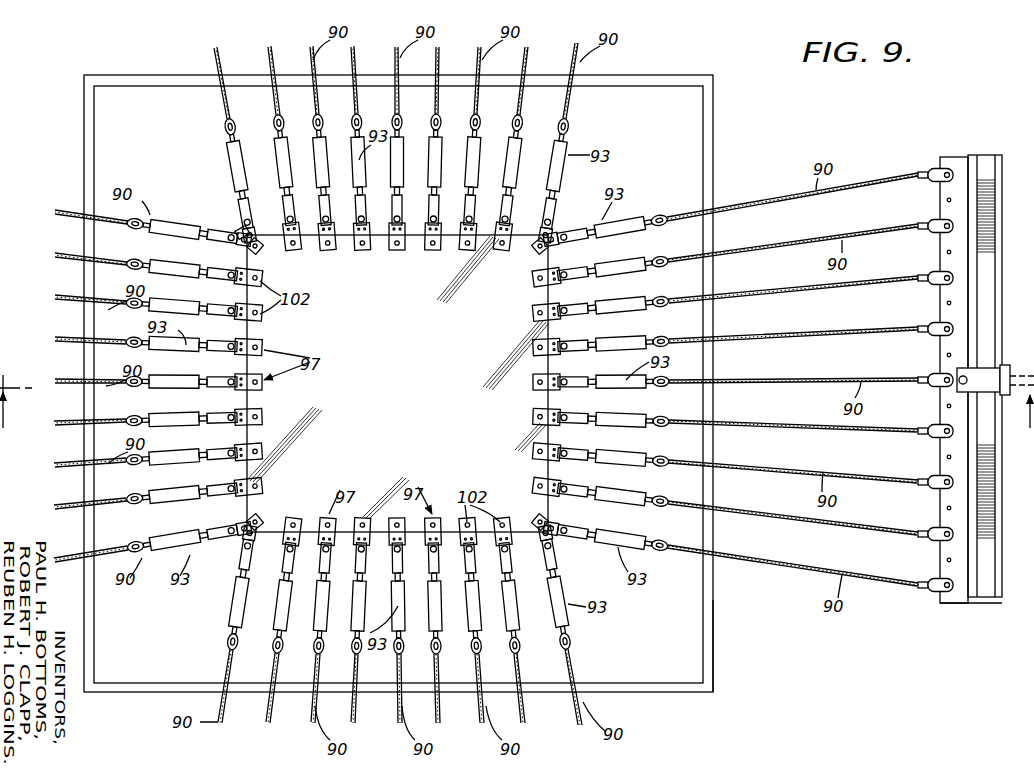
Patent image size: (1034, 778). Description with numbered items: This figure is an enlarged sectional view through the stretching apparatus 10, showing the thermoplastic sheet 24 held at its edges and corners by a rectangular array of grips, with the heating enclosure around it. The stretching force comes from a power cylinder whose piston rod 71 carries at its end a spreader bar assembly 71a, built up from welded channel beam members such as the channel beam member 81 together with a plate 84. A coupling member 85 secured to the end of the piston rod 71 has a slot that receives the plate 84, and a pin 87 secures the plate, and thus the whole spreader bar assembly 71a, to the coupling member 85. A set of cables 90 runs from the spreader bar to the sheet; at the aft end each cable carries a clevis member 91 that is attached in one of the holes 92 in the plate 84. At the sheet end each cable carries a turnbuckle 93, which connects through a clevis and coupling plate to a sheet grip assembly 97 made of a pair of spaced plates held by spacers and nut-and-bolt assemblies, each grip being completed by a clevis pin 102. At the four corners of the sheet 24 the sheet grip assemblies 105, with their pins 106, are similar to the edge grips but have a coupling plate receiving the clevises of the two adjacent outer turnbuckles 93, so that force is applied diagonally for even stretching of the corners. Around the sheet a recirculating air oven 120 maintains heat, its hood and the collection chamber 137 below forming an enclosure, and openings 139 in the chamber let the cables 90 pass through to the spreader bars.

The connecting rod / actuating member 10 is at (516, 412).
The sheet 24 is at (397, 383).
The piston rod 71 is at (1008, 368).
The spreader bar assembly 71a is at (966, 155).
The channel beam member 81 is at (990, 247).
The plate 84 is at (958, 604).
The coupling member 85 is at (957, 390).
The pin 87 is at (958, 374).
The cables 90 is at (221, 62).
The clevis member 91 is at (931, 169).
The holes 92 is at (945, 253).
The turnbuckles 93 is at (232, 158).
The sheet grip assembly 97 is at (433, 251).
The clevis pin 102 is at (328, 250).
The sheet grip assemblies for the sheet corners 105 is at (266, 252).
The pins 106 is at (238, 246).
The recirculating air oven 120 is at (715, 663).
The collection chamber 137 is at (673, 721).
The openings 139 is at (137, 76).